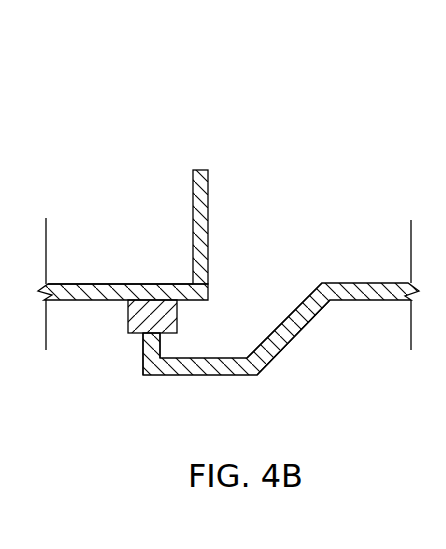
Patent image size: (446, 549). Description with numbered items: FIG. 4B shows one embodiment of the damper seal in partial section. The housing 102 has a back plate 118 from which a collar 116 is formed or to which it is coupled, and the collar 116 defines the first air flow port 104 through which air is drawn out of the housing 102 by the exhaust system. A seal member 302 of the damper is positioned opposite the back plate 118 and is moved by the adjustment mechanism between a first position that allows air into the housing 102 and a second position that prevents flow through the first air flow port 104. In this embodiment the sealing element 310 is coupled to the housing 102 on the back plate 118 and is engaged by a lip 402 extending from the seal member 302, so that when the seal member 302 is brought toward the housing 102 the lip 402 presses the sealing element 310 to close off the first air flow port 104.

The housing 102 is at (142, 277).
The first air flow port 104 is at (253, 262).
The collar 116 is at (205, 200).
The back plate 118 is at (89, 285).
The seal member 302 is at (304, 330).
The sealing element 310 is at (128, 318).
The lip 402 is at (143, 345).